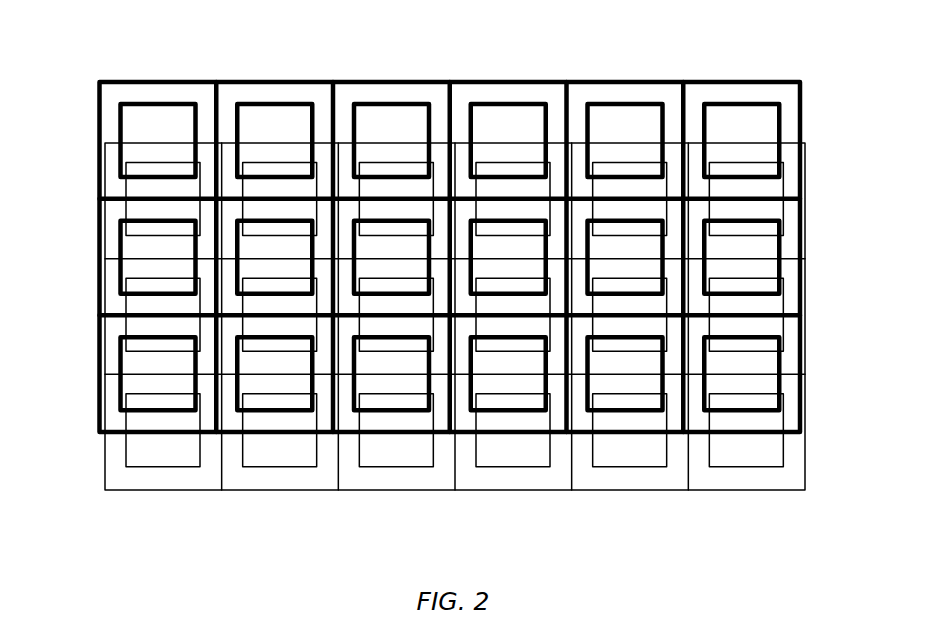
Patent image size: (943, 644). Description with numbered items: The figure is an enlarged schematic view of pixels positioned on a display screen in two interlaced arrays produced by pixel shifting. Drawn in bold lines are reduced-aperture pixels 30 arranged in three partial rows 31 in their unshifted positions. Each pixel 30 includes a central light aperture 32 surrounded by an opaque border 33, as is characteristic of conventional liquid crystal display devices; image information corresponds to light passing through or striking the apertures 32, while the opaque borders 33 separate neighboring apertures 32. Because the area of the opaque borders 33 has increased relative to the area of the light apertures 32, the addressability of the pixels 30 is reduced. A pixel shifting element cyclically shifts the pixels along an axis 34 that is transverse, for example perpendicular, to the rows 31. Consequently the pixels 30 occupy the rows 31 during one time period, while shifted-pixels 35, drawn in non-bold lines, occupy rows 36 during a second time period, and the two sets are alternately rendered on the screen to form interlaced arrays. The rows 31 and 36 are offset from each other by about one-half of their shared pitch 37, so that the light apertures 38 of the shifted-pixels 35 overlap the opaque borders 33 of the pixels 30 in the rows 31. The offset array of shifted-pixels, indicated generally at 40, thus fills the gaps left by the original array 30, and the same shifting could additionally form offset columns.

The reduced-aperture pixel 30 is at (767, 68).
The partial row 31 is at (66, 374).
The central light aperture 32 is at (757, 133).
The opaque border 33 is at (368, 88).
The axis 34 is at (907, 334).
The shifted-pixel 35 is at (181, 484).
The row 36 is at (818, 374).
The pitch 37 is at (907, 190).
The light aperture 38 is at (761, 461).
The lower capacitor electrode layer / second electrode pattern 40 is at (784, 512).